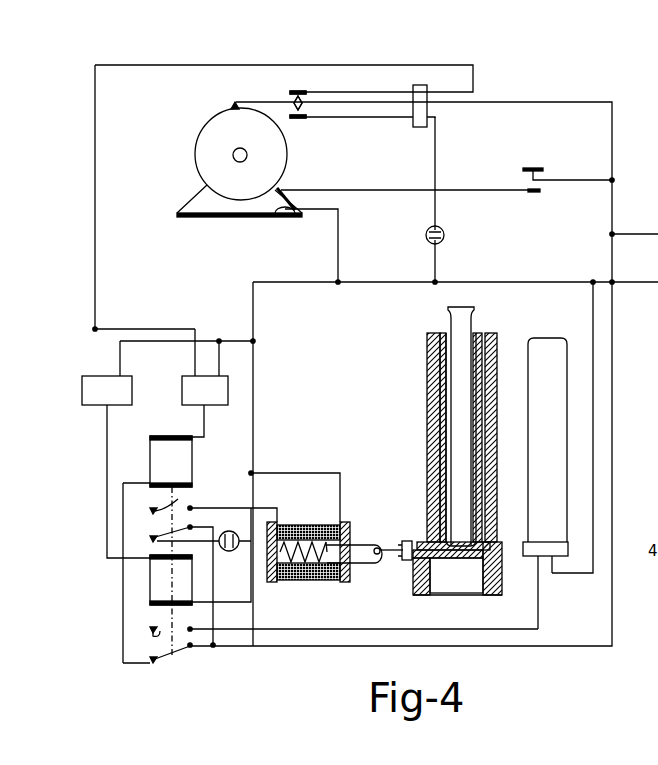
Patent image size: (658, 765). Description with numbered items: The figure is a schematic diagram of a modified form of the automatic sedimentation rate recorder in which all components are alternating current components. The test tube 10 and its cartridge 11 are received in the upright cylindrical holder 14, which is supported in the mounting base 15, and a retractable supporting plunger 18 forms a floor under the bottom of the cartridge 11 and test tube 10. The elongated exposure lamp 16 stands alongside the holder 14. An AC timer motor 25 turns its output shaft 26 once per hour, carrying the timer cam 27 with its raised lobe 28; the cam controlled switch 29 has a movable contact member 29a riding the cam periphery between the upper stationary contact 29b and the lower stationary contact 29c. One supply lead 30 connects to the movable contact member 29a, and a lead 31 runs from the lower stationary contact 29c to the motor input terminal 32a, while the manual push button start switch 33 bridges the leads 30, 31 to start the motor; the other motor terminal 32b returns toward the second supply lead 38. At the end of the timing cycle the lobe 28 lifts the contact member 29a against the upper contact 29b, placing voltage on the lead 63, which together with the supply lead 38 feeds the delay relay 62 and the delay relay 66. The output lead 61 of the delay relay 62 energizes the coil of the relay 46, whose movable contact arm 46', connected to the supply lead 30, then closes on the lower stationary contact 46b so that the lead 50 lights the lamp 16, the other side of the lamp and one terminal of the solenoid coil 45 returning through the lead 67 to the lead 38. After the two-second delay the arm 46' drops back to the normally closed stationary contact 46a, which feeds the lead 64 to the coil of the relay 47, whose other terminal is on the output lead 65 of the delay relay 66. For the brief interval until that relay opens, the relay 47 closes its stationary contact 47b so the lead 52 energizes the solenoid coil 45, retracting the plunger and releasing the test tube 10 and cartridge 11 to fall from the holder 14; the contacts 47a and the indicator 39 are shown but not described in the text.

The test tube 10 is at (452, 308).
The cartridge 11 is at (440, 331).
The cylindrical holder 14 is at (427, 340).
The mounting base 15 is at (414, 596).
The exposure lamp 16 is at (543, 338).
The retractable supporting plunger 18 is at (458, 560).
The AC timer motor 25 is at (196, 182).
The output shaft 26 is at (232, 157).
The timer cam 27 is at (209, 133).
The raised lobe 28 is at (231, 106).
The cam controlled switch 29 is at (307, 83).
The movable contact member 29a is at (266, 99).
The upper stationary contact 29b is at (322, 91).
The lower stationary contact 29c is at (378, 117).
The supply lead 30 is at (636, 236).
The lead 31 is at (438, 158).
The input terminal 32a is at (282, 190).
The input terminal 32b is at (281, 214).
The manual push button start switch 33 is at (544, 178).
The supply lead 38 is at (632, 283).
The indicator lamp 39 is at (445, 234).
The solenoid coil 45 is at (320, 582).
The relay 46 is at (171, 580).
The normally closed stationary contact 46a is at (153, 668).
The lower stationary contact 46b is at (150, 633).
The movable contact arm 46' is at (180, 661).
The relay 47 is at (179, 472).
The relay contact 47a is at (152, 541).
The stationary contact 47b is at (178, 502).
The lead 50 is at (404, 629).
The lead 52 is at (263, 509).
The output lead 61 is at (107, 491).
The delay relay 62 is at (116, 401).
The lead 63 is at (95, 182).
The lead 64 is at (123, 616).
The output lead 65 is at (204, 418).
The delay relay 66 is at (214, 401).
The lead 67 is at (586, 574).